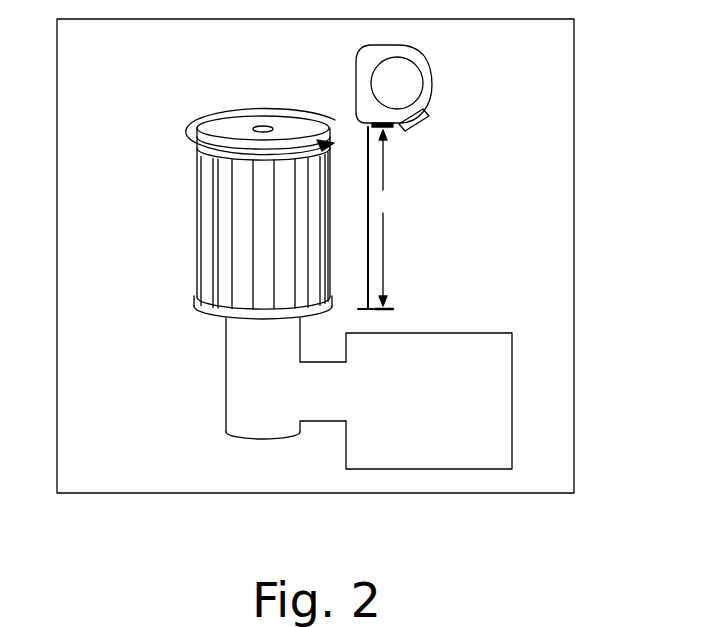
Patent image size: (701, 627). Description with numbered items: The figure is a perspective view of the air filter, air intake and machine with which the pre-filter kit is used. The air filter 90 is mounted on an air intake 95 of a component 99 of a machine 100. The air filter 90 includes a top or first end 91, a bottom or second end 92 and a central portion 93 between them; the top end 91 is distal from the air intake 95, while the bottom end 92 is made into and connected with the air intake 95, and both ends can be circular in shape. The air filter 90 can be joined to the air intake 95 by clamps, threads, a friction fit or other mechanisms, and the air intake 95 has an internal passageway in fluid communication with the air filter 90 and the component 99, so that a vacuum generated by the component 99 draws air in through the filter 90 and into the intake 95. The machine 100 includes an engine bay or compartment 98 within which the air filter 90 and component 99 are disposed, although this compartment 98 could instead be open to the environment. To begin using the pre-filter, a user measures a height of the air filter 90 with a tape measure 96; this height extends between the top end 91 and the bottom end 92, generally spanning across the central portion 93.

The air filter 90 is at (197, 221).
The top end 91 is at (197, 151).
The bottom end 92 is at (197, 305).
The central portion 93 is at (243, 263).
The air intake 95 is at (243, 363).
The tape measure 96 is at (432, 72).
The engine bay or compartment 98 is at (471, 163).
The component 99 is at (497, 395).
The machine 100 is at (575, 182).